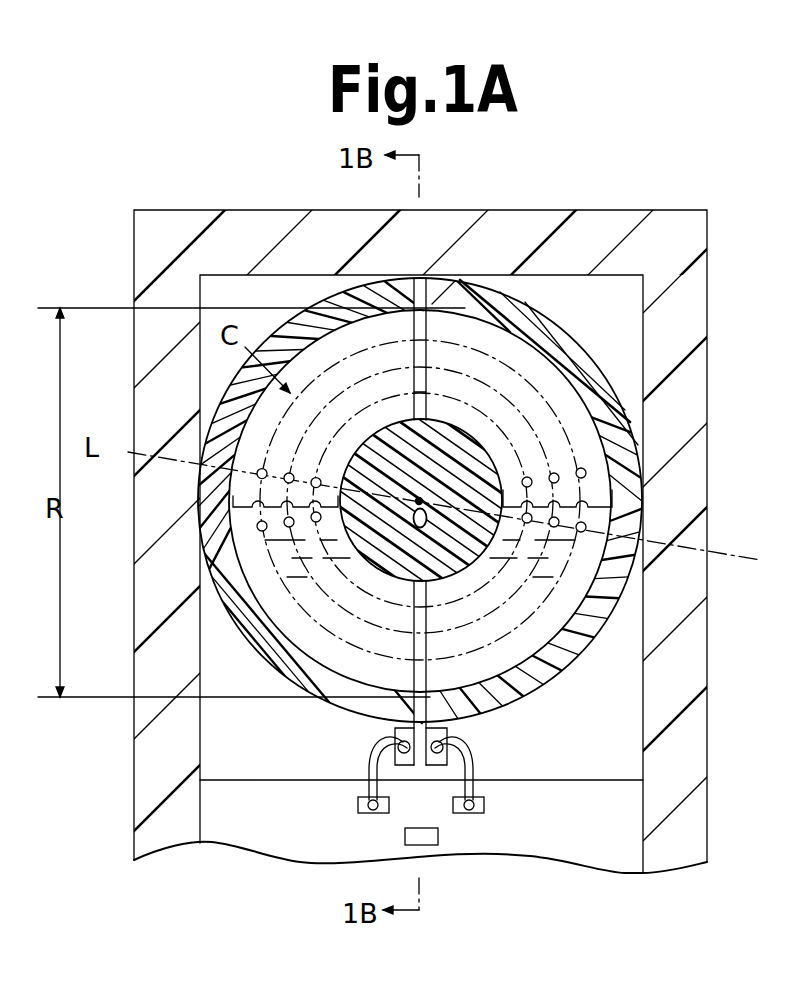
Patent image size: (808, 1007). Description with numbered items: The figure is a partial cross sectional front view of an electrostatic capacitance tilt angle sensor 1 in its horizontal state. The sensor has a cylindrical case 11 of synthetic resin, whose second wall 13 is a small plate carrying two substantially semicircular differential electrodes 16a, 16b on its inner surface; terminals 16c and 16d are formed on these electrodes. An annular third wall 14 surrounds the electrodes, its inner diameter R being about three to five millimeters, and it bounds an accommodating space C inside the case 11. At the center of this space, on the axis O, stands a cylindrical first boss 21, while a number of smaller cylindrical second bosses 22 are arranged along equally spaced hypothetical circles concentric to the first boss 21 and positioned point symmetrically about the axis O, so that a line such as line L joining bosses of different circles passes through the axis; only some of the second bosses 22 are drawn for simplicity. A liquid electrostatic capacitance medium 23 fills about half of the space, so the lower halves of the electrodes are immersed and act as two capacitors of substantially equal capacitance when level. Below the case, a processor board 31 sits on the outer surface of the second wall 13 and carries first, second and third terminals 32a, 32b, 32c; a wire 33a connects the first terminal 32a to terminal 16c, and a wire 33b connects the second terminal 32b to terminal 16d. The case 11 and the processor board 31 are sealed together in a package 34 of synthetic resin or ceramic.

The tilt angle sensor 1 is at (662, 188).
The case 11 is at (556, 692).
The second wall 13 is at (228, 778).
The third wall 14 is at (580, 358).
The differential electrode 16a is at (292, 622).
The differential electrode 16b is at (600, 600).
The terminal 16c is at (398, 735).
The terminal 16d is at (448, 735).
The first boss 21 is at (480, 444).
The second bosses 22 is at (535, 490).
The liquid electrostatic capacitance medium 23 is at (315, 646).
The processor board 31 is at (589, 856).
The first terminal 32a is at (360, 806).
The second terminal 32b is at (482, 806).
The third terminal 32c is at (426, 846).
The wire 33a is at (368, 763).
The wire 33b is at (474, 766).
The package 34 is at (678, 864).